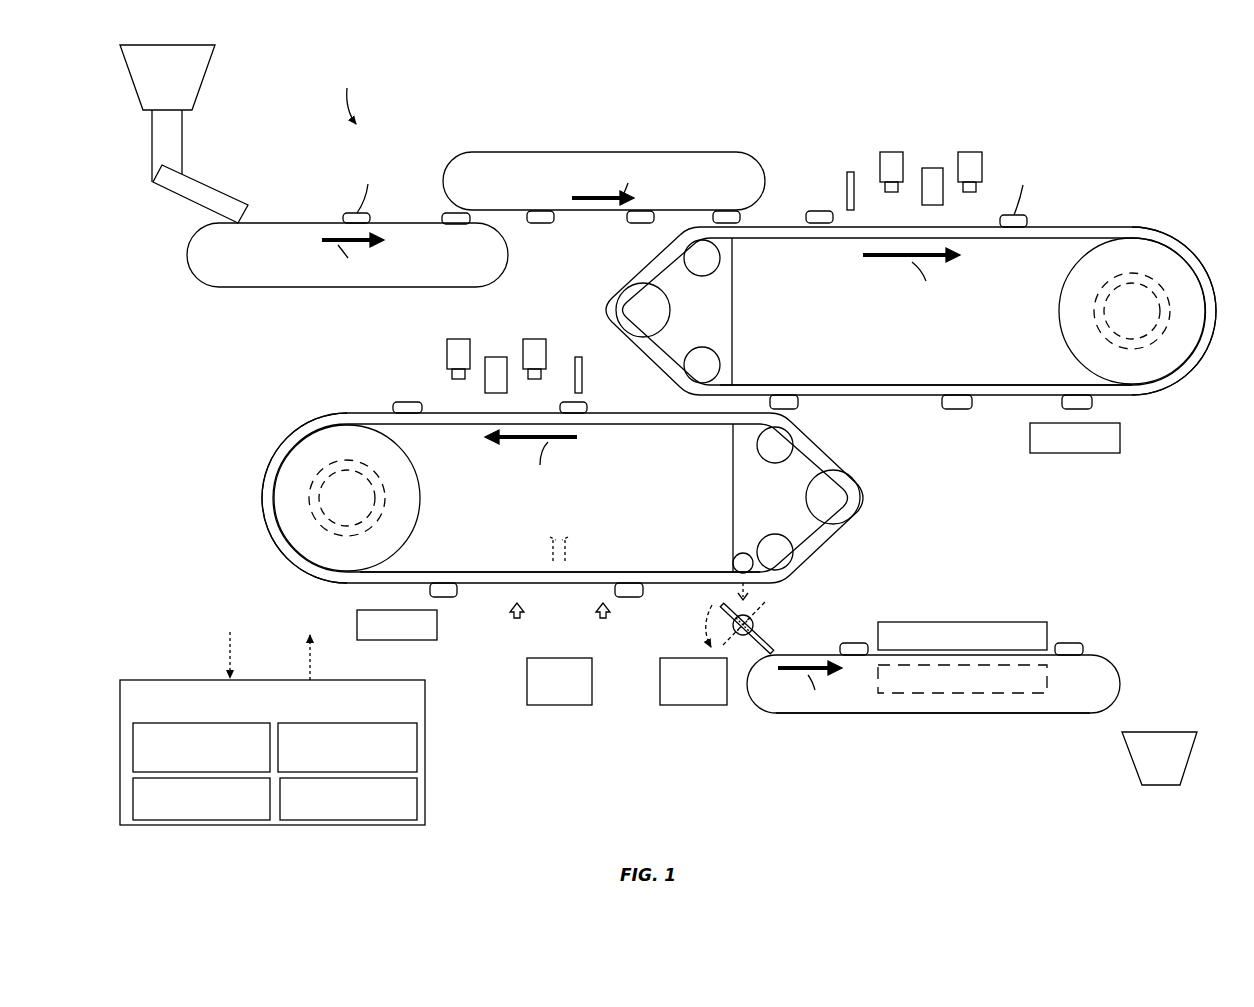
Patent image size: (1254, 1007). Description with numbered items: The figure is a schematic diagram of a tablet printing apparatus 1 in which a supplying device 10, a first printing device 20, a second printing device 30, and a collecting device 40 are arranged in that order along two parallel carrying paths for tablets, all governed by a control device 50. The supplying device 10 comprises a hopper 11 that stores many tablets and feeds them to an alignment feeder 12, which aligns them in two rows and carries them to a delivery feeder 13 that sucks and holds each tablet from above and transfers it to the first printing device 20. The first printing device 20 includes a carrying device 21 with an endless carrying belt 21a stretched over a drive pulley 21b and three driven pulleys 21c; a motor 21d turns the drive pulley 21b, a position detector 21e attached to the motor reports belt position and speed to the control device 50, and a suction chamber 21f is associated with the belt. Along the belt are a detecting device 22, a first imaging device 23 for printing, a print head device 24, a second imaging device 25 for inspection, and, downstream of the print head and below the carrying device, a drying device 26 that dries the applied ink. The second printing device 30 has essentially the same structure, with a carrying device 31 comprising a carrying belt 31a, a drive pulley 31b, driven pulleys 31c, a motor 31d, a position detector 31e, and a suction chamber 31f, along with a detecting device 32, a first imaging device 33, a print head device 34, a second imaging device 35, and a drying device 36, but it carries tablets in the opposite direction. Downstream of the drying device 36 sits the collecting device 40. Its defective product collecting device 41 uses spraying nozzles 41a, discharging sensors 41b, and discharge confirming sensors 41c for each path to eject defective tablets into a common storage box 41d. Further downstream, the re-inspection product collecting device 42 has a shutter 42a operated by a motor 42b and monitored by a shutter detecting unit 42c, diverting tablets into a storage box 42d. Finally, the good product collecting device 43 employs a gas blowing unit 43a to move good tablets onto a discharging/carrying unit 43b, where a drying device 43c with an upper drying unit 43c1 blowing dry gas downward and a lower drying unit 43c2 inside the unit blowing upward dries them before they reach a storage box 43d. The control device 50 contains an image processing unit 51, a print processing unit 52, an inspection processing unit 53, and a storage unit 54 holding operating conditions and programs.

The tablet printing apparatus 1 is at (1134, 79).
The supplying device 10 is at (242, 68).
The hopper 11 is at (188, 75).
The alignment feeder 12 is at (287, 223).
The delivery feeder 13 is at (600, 152).
The first printing device 20 is at (1041, 114).
The carrying device 21 is at (914, 292).
The carrying belt 21a is at (1075, 227).
The drive pulley 21b is at (1176, 240).
The driven pulleys 21c is at (624, 294).
The motor 21d is at (1160, 262).
The position detector 21e is at (1160, 292).
The suction chamber 21f is at (1010, 380).
The detecting device 22 is at (850, 172).
The first imaging device 23 is at (890, 152).
The print head device 24 is at (930, 168).
The second imaging device 25 is at (970, 152).
The drying device 26 is at (1070, 453).
The second printing device 30 is at (188, 536).
The carrying device 31 is at (573, 472).
The carrying belt 31a is at (340, 417).
The drive pulley 31b is at (290, 427).
The driven pulleys 31c is at (778, 464).
The motor 31d is at (305, 460).
The position detector 31e is at (305, 520).
The suction chamber 31f is at (483, 585).
The detecting device 32 is at (579, 357).
The first imaging device 33 is at (538, 339).
The print head device 34 is at (495, 357).
The second imaging device 35 is at (452, 339).
The drying device 36 is at (425, 640).
The collecting device 40 is at (734, 771).
The defective product collecting device 41 is at (554, 657).
The spraying nozzles 41a is at (559, 565).
The discharging sensors 41b is at (515, 620).
The discharge confirming sensors 41c is at (603, 620).
The storage box 41d is at (560, 705).
The re-inspection product collecting device 42 is at (715, 680).
The shutter 42a is at (718, 605).
The motor 42b is at (752, 620).
The shutter detecting unit 42c is at (752, 628).
The storage box 42d is at (690, 705).
The good product collecting device 43 is at (972, 675).
The gas blowing unit 43a is at (933, 636).
The discharging/carrying unit 43b is at (820, 713).
The drying device 43c is at (967, 655).
The upper drying unit 43c1 is at (1030, 622).
The lower drying unit 43c2 is at (977, 693).
The storage box 43d is at (1160, 732).
The control device 50 is at (273, 728).
The image processing unit 51 is at (133, 750).
The print processing unit 52 is at (133, 795).
The inspection processing unit 53 is at (417, 750).
The storage unit 54 is at (417, 795).